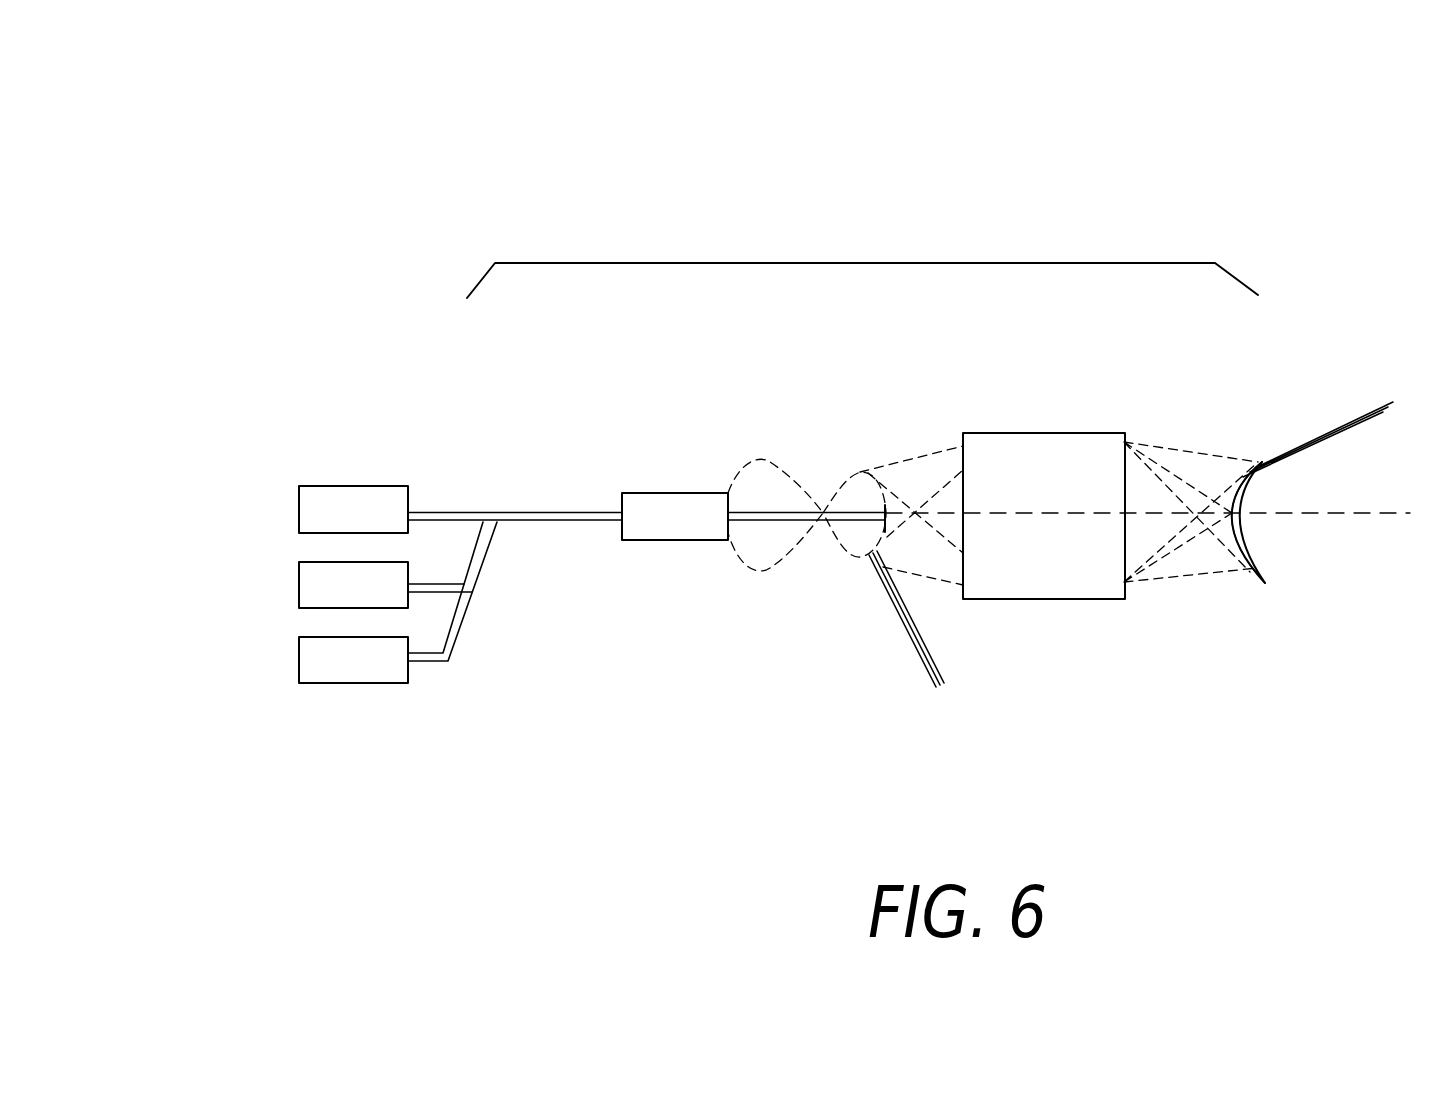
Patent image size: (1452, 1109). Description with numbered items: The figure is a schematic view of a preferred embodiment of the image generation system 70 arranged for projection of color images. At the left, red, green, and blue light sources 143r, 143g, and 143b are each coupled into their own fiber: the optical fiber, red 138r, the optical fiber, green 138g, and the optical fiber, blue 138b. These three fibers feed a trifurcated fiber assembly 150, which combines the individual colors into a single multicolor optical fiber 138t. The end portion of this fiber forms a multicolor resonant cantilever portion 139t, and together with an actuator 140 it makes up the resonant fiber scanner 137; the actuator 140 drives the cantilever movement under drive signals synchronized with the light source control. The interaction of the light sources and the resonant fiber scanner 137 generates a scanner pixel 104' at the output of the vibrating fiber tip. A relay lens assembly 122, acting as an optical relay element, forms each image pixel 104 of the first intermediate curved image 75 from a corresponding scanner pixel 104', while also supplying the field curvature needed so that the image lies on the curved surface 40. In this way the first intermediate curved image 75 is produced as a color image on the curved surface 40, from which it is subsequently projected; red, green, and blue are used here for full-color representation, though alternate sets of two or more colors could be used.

The image generation system 70 is at (873, 263).
The red light source 143r is at (305, 508).
The green light source 143g is at (320, 590).
The blue light source 143b is at (313, 662).
The optical fiber, red 138r is at (462, 511).
The optical fiber, green 138g is at (447, 592).
The optical fiber, blue 138b is at (447, 662).
The actuator 140 is at (650, 540).
The multicolor optical fiber 138t is at (594, 511).
The resonant fiber scanner 137 is at (758, 428).
The multicolor resonant cantilever portion 139t is at (778, 522).
The relay lens assembly 122 is at (1020, 433).
The scanner pixel 104' is at (943, 656).
The curved surface 40 is at (1252, 470).
The first intermediate curved image 75 is at (1247, 547).
The image pixel 104 is at (1336, 389).
The trifurcated fiber assembly 150 is at (625, 742).